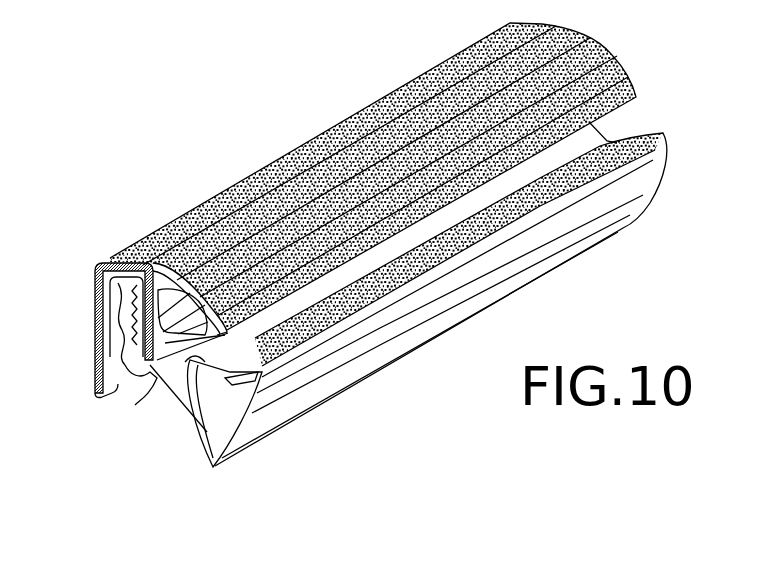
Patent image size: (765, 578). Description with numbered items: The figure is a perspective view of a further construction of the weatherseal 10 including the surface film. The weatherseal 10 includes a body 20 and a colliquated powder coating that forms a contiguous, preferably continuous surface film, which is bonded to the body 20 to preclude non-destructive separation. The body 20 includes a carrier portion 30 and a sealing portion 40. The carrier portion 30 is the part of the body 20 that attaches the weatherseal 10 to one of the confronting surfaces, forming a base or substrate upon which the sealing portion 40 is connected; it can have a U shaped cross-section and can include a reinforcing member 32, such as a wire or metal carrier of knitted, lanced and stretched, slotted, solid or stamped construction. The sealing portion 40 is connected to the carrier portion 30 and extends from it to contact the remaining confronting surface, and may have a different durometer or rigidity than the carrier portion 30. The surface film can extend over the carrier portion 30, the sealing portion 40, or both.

The weatherseal 10 is at (180, 152).
The body 20 is at (136, 403).
The carrier portion 30 is at (140, 360).
The reinforcing member 32 is at (95, 317).
The sealing portion 40 is at (173, 273).